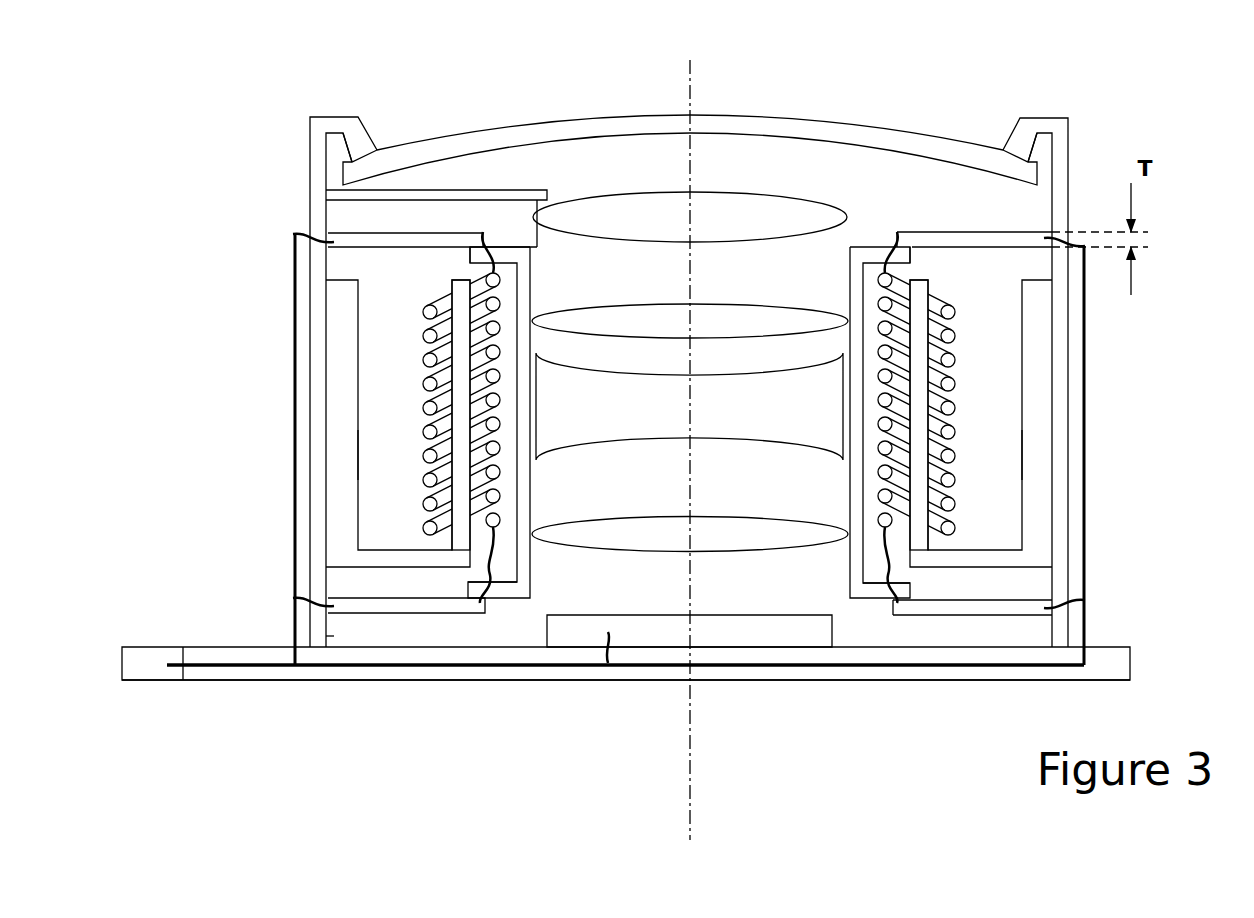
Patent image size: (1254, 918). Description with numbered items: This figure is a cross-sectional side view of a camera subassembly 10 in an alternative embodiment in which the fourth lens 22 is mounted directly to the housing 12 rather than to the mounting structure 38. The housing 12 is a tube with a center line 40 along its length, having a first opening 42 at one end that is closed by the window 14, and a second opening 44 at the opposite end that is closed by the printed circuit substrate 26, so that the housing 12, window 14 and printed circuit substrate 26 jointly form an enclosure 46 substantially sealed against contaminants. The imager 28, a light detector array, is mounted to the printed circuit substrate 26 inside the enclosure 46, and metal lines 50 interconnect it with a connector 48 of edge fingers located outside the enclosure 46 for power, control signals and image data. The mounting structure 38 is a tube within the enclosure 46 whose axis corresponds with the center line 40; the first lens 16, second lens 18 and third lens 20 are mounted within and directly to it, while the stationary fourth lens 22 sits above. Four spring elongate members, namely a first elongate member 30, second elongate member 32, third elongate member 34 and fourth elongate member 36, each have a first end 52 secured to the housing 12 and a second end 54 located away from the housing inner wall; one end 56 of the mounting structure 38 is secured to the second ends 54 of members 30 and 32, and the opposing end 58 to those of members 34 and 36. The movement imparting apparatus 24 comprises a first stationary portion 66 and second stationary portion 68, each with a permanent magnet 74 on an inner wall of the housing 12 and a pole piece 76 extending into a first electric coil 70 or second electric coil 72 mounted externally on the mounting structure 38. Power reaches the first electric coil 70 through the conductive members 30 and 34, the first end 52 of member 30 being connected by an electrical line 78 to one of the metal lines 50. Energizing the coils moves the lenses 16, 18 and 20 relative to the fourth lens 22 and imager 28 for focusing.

The camera subassembly 10 is at (278, 102).
The housing 12 is at (306, 170).
The window 14 is at (784, 125).
The first lens 16 is at (711, 547).
The second lens 18 is at (757, 417).
The third lens 20 is at (644, 333).
The fourth lens 22 is at (629, 228).
The movement imparting apparatus 24 is at (386, 307).
The printed circuit substrate 26 is at (782, 682).
The imager 28 is at (689, 639).
The first elongate member 30 is at (410, 241).
The second elongate member 32 is at (974, 241).
The third elongate member 34 is at (406, 614).
The fourth elongate member 36 is at (975, 615).
The mounting structure 38 is at (532, 282).
The center line 40 is at (706, 450).
The first opening 42 is at (376, 136).
The second opening 44 is at (333, 637).
The enclosure 46 is at (864, 197).
The connector 48 is at (610, 665).
The metal lines 50 is at (452, 682).
The first end 52 is at (338, 239).
The second end 54 is at (483, 232).
The one end of mounting structure 56 is at (523, 256).
The opposing end of mounting structure 58 is at (533, 588).
The first stationary portion 66 is at (360, 425).
The second stationary portion 68 is at (1027, 404).
The first electric coil 70 is at (421, 356).
The second electric coil 72 is at (954, 379).
The permanent magnet 74 is at (687, 455).
The pole piece 76 is at (447, 543).
The electrical line 78 is at (292, 425).